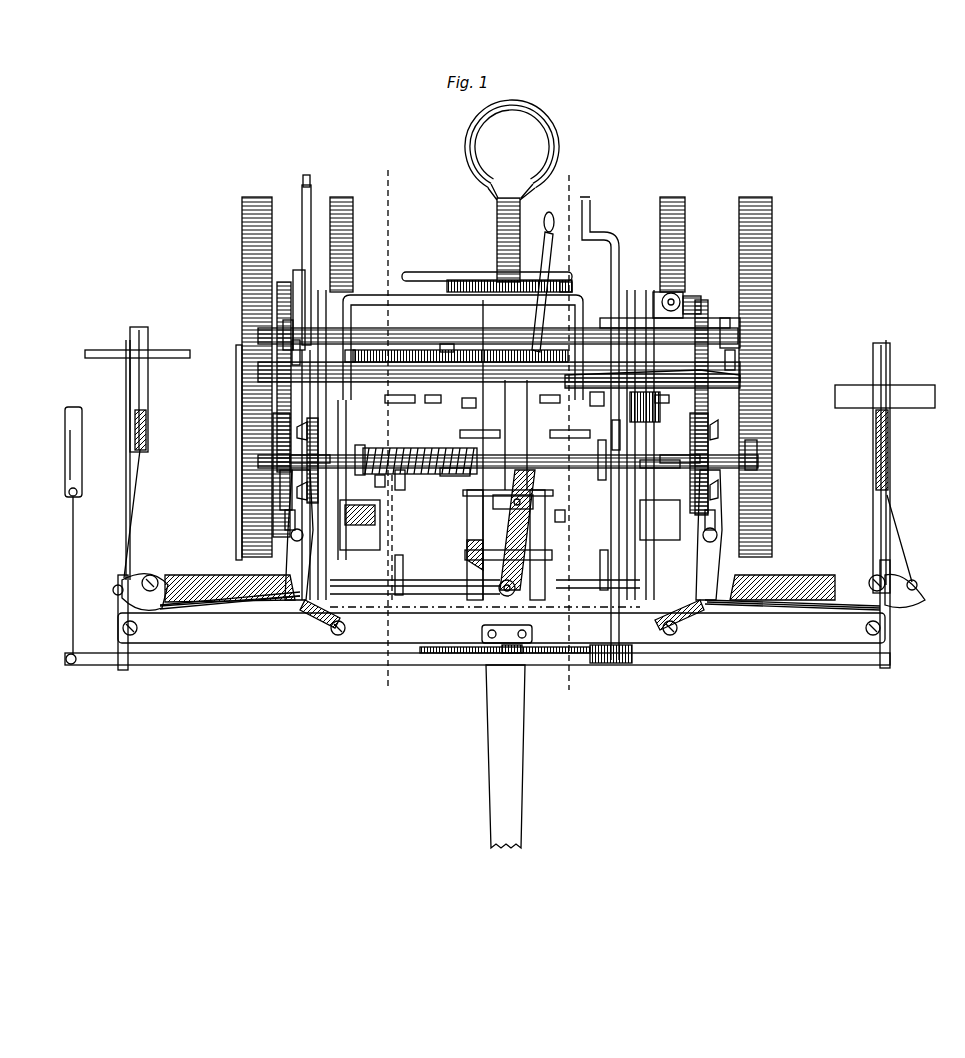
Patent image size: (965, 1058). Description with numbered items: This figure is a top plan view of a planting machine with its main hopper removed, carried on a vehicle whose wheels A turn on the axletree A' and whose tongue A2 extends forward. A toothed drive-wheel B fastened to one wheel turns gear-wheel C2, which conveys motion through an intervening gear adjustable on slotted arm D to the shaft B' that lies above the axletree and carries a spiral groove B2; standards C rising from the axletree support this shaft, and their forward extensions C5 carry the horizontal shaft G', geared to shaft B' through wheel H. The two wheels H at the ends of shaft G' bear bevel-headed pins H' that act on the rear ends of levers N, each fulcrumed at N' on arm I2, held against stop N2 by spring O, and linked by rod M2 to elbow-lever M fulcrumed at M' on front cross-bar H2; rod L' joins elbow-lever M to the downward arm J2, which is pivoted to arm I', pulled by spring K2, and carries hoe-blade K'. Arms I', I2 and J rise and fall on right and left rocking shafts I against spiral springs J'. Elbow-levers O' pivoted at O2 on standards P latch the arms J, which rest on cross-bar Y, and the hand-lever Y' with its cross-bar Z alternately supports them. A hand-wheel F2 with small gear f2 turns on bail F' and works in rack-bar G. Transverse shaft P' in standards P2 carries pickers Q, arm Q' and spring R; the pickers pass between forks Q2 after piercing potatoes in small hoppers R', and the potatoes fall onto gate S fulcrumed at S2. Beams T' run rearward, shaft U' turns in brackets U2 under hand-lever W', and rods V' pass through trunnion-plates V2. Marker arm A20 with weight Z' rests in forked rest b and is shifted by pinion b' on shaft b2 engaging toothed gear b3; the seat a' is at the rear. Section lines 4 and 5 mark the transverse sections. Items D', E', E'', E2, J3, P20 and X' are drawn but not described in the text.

The wheels A is at (507, 366).
The axletree A' is at (498, 325).
The tongue A2 is at (516, 756).
The marker arm A20 is at (278, 666).
The drive-wheel B is at (223, 452).
The shaft B' is at (652, 380).
The spiral groove B2 is at (636, 402).
The forked rest b is at (514, 628).
The pinion b' is at (541, 660).
The shaft b2 is at (611, 574).
The circular toothed gear b3 is at (534, 664).
The standards C is at (290, 348).
The gear-wheel C2 is at (277, 308).
The standard extensions C5 is at (722, 428).
The slotted arm D is at (258, 305).
The stop D' is at (431, 406).
The revolving paddle E is at (499, 373).
The rack stop E' is at (472, 406).
The rack end E'' is at (345, 364).
The rack block E2 is at (593, 408).
The bail F' is at (463, 332).
The hand-wheel F2 is at (456, 280).
The small gear-wheel f2 is at (433, 266).
The rack-bar G is at (571, 276).
The horizontal shaft G' is at (502, 475).
The wheels H is at (249, 494).
The bevel-headed pins H' is at (507, 460).
The front cross-bar H2 is at (501, 628).
The horizontal shafts I is at (370, 569).
The arm I' is at (506, 462).
The arm I2 is at (787, 568).
The arm J is at (491, 545).
The spiral springs J' is at (500, 569).
The downwardly-extending arms J2 is at (876, 343).
The pivot J3 is at (918, 584).
The hoe-blades K' is at (508, 390).
The springs K2 is at (876, 462).
The rod L' is at (532, 516).
The elbow-lever M is at (527, 604).
The fulcrum M' is at (513, 562).
The rod M2 is at (802, 612).
The lever N is at (503, 535).
The fulcrum N' is at (505, 522).
The stop N2 is at (690, 568).
The spring O is at (533, 637).
The elbow-levers O' is at (521, 439).
The pivots O2 is at (546, 490).
The standards P is at (561, 478).
The transverse shaft P' is at (591, 457).
The standards P2 is at (360, 470).
The block P20 is at (660, 512).
The pickers Q is at (512, 566).
The short arm Q' is at (464, 408).
The forks Q2 is at (404, 478).
The spring R is at (508, 451).
The small hoppers R' is at (490, 499).
The gate S is at (456, 340).
The fulcrum S2 is at (660, 404).
The beams T' is at (507, 244).
The horizontal shaft U' is at (665, 318).
The brackets U2 is at (278, 334).
The rods V' is at (684, 292).
The trunnion-plates V2 is at (663, 292).
The hand-lever W' is at (299, 172).
The slide X' is at (294, 261).
The cross-bar Y is at (493, 557).
The hand-lever Y' is at (537, 404).
The cross-bar Z is at (486, 511).
The cord and weight Z' is at (83, 531).
The seat a' is at (512, 191).
The section line 4 is at (562, 703).
The section line 5 is at (381, 175).